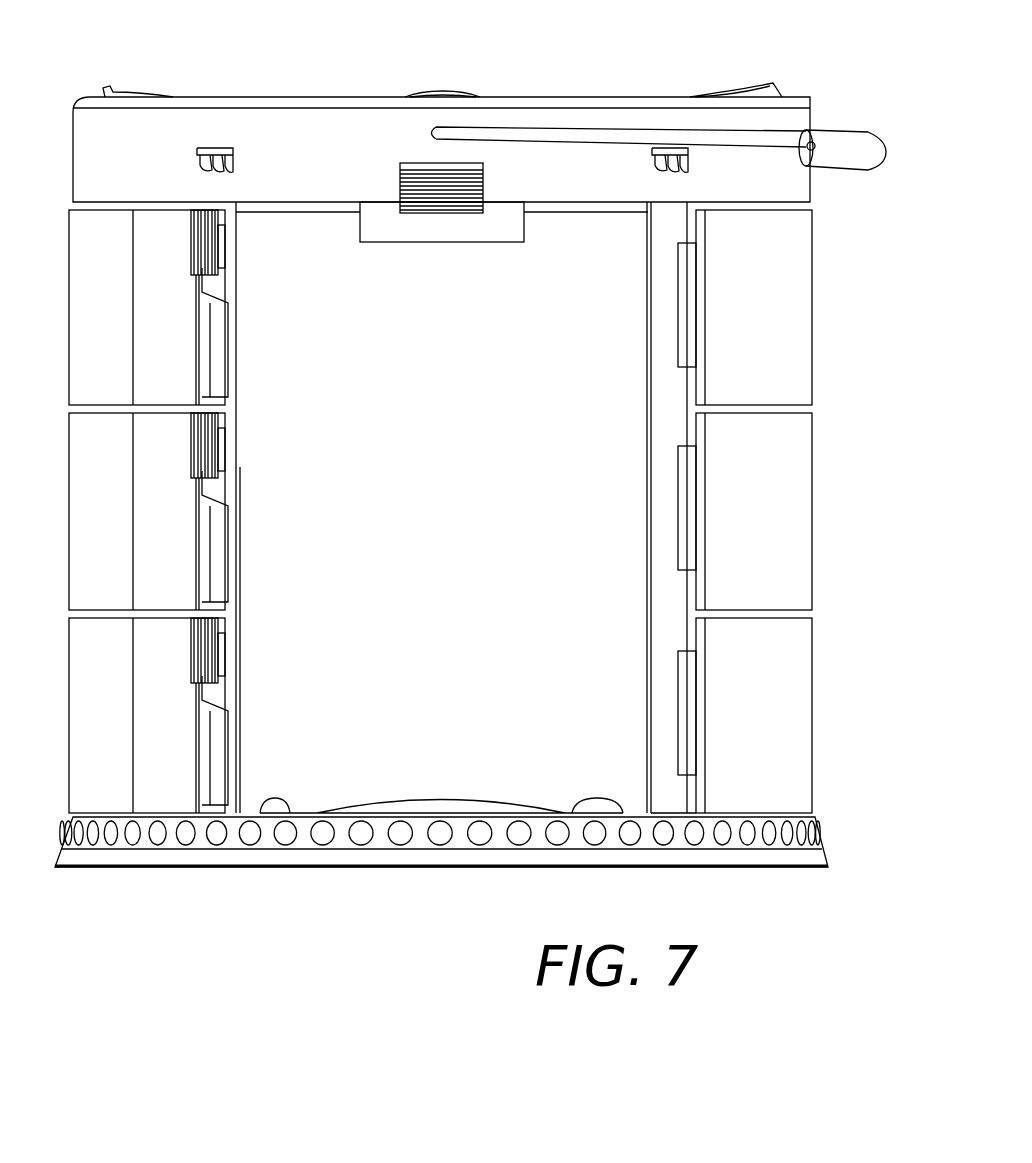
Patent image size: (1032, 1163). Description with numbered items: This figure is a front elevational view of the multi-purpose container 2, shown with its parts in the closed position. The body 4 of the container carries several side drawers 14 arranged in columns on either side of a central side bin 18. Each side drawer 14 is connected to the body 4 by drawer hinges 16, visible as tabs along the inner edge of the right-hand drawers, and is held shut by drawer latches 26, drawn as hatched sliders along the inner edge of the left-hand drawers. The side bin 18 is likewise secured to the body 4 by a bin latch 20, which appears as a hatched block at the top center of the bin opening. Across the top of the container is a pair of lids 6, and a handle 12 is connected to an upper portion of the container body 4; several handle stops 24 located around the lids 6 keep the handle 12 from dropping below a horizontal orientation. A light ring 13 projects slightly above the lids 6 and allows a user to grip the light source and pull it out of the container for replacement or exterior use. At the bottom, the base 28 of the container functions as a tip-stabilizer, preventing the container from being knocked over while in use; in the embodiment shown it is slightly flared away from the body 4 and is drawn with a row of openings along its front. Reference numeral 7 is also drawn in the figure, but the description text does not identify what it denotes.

The multi-purpose container 2 is at (90, 43).
The body 4 is at (672, 604).
The lids 6 is at (550, 85).
The fins 7 is at (110, 90).
The handle 12 is at (843, 137).
The light ring 13 is at (430, 93).
The side drawers 14 is at (112, 338).
The drawer hinges 16 is at (686, 278).
The side bin 18 is at (380, 382).
The bin latch 20 is at (420, 188).
The handle stops 24 is at (222, 149).
The drawer latches 26 is at (210, 237).
The base 28 is at (805, 840).